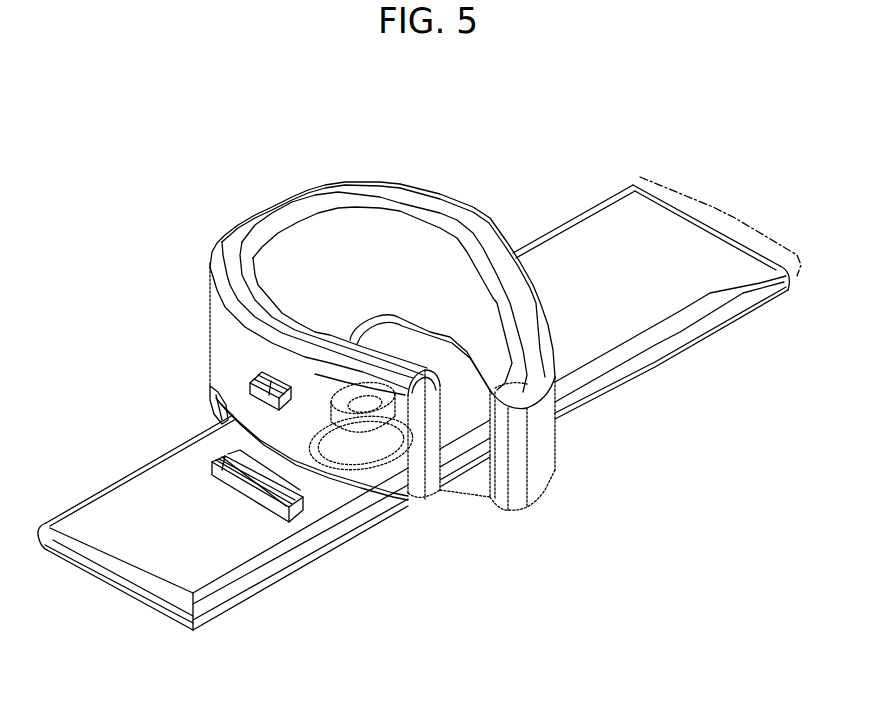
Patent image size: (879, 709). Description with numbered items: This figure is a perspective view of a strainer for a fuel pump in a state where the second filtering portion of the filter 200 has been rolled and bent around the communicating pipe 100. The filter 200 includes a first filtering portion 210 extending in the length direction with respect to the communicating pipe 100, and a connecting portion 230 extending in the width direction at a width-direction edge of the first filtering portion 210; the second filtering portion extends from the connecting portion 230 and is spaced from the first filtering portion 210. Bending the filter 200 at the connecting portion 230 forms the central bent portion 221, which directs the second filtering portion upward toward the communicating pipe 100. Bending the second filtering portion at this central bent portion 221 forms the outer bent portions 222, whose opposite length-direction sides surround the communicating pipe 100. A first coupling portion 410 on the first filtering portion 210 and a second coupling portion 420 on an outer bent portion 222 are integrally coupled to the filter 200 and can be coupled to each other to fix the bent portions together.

The communicating pipe 100 is at (355, 470).
The filter 200 is at (730, 333).
The first filtering portion 210 is at (732, 216).
The 2-1-th bent portion 221 is at (310, 262).
The 2-2-th bent portions 222 is at (320, 373).
The connecting portion 230 is at (190, 400).
The first coupling portion 410 is at (255, 508).
The second coupling portion 420 is at (248, 380).